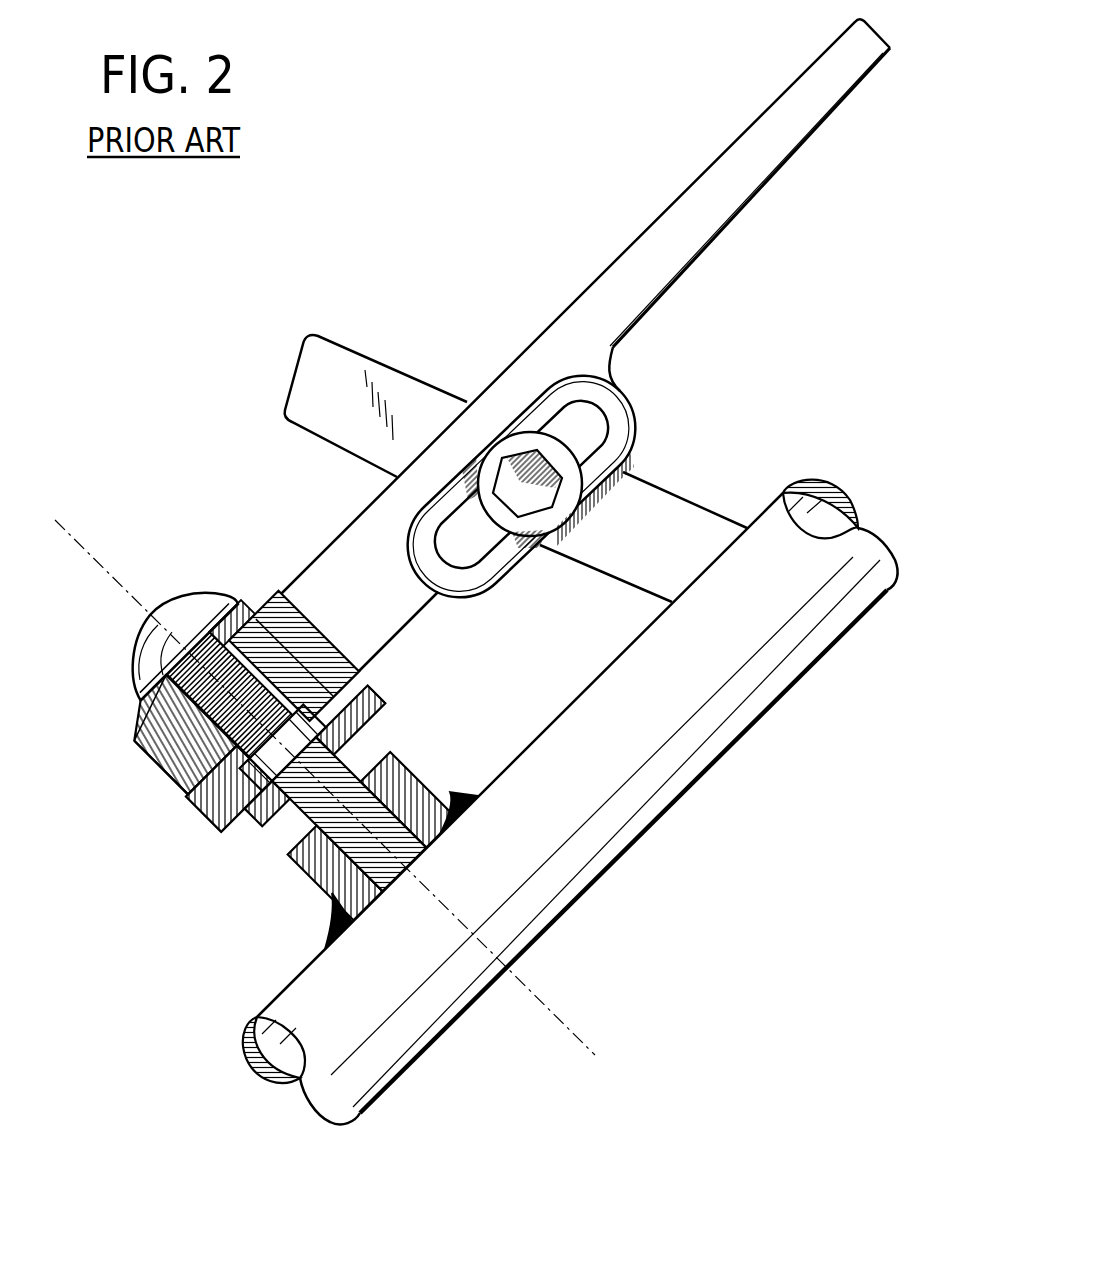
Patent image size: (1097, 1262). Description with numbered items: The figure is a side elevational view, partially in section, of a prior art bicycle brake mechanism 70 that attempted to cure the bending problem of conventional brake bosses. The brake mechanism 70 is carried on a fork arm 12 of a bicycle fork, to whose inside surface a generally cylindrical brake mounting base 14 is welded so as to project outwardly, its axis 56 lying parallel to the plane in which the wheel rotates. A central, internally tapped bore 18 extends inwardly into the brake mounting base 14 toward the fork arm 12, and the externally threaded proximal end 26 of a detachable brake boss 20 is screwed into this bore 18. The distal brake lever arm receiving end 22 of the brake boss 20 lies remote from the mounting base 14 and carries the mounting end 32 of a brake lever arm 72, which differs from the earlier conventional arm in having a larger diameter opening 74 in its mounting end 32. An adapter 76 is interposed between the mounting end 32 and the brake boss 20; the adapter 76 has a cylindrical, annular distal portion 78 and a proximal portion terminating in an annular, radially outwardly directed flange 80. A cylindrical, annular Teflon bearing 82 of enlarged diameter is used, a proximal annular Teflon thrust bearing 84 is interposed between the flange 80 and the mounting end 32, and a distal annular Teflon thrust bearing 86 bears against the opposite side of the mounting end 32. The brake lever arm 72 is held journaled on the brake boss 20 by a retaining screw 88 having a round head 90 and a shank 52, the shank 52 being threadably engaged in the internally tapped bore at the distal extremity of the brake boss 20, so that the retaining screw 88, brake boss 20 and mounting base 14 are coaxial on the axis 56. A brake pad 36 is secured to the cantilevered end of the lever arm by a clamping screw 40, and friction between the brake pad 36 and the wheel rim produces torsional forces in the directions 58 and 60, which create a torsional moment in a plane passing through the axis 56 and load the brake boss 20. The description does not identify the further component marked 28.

The fork arm 12 is at (710, 707).
The brake mounting base 14 is at (297, 873).
The internally tapped bore 18 is at (390, 818).
The brake boss 20 is at (368, 750).
The brake lever arm receiving end 22 is at (160, 735).
The proximal end 26 is at (337, 893).
The bolt section 28 is at (297, 823).
The mounting end 32 is at (267, 603).
The brake pad 36 is at (697, 527).
The clamping screw 40 is at (510, 450).
The shank 52 is at (205, 812).
The axis 56 is at (65, 520).
The directional arrow 58 is at (730, 127).
The directional arrow 60 is at (830, 228).
The brake mechanism 70 is at (120, 893).
The brake lever arm 72 is at (535, 318).
The opening 74 is at (180, 765).
The adapter 76 is at (382, 690).
The distal portion 78 is at (298, 655).
The flange 80 is at (380, 722).
The Teflon bearing 82 is at (205, 775).
The proximal thrust bearing 84 is at (210, 823).
The distal thrust bearing 86 is at (140, 716).
The retaining screw 88 is at (148, 597).
The round head 90 is at (135, 652).